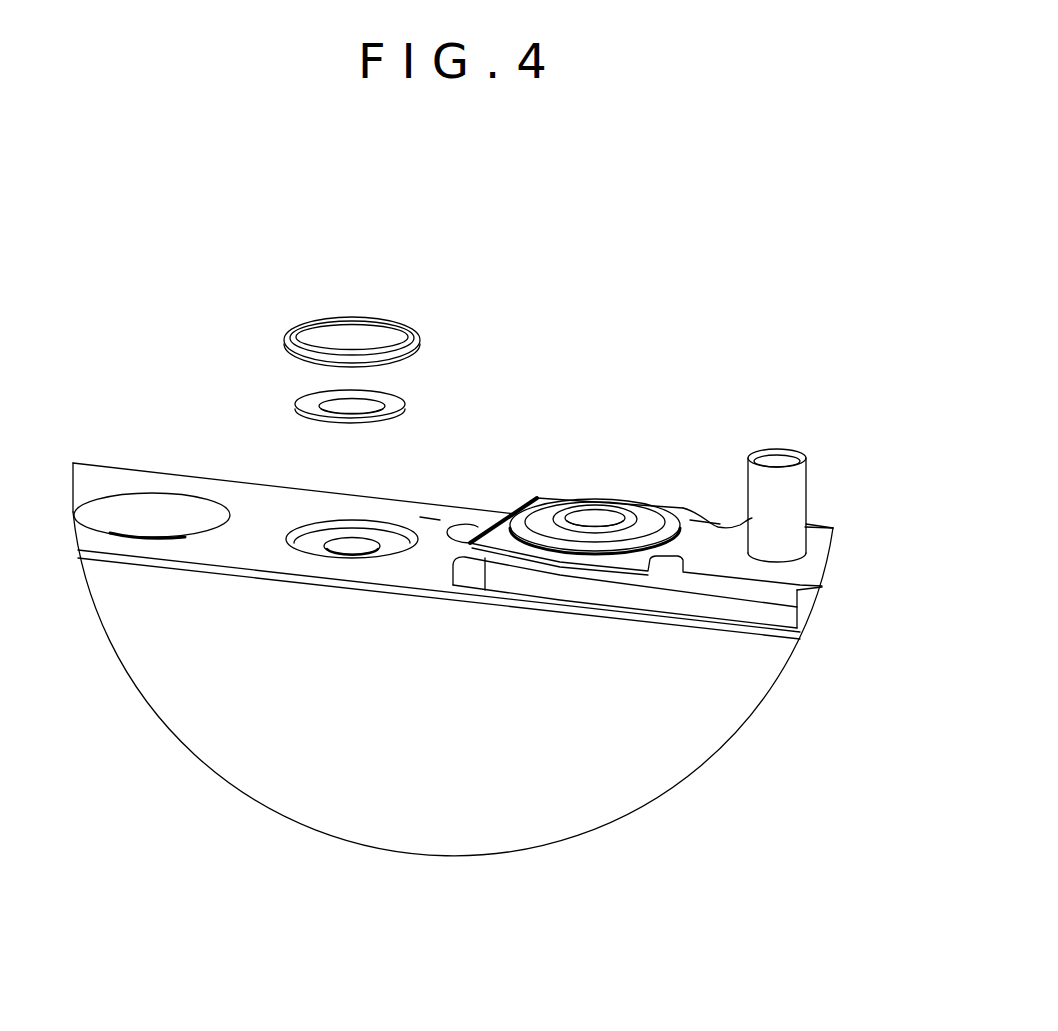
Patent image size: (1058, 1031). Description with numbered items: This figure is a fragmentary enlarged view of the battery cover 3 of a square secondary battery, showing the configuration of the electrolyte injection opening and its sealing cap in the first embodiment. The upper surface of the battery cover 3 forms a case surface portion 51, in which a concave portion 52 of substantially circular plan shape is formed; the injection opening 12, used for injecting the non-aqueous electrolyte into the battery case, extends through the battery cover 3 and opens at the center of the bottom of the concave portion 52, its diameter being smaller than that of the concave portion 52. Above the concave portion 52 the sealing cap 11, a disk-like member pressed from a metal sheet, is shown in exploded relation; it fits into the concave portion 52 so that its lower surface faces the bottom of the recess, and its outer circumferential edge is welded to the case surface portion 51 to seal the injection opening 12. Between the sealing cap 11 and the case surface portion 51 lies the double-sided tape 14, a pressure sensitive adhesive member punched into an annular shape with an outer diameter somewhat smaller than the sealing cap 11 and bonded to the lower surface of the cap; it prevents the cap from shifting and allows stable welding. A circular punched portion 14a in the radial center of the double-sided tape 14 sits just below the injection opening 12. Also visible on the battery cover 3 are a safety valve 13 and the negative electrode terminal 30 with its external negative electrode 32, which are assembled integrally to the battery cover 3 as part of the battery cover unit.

The battery cover 3 is at (265, 518).
The sealing cap 11 is at (372, 332).
The injection opening 12 is at (352, 546).
The safety valve 13 is at (150, 533).
The double-sided tape 14 is at (398, 408).
The punched portion 14a is at (347, 407).
The negative electrode terminal 30 is at (714, 382).
The external negative electrode 32 is at (705, 536).
The case surface portion 51 is at (432, 522).
The concave portion 52 is at (310, 540).